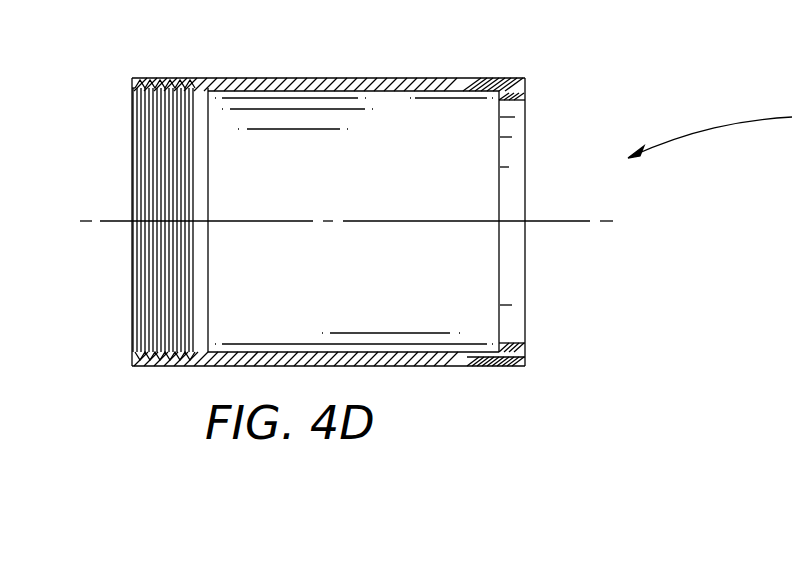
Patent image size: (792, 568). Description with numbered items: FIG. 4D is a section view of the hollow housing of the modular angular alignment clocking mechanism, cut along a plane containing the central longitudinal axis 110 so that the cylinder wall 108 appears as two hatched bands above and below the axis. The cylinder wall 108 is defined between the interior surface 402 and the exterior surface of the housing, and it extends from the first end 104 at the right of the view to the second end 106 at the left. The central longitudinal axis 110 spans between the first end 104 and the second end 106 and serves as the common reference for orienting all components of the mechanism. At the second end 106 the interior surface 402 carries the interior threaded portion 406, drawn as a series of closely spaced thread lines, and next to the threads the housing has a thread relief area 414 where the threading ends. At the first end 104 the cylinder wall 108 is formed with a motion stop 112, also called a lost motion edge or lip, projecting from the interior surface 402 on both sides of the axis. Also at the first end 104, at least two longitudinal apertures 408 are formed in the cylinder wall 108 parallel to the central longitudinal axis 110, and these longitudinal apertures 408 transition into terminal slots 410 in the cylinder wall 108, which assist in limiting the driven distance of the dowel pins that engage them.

The first end 104 is at (528, 78).
The second end 106 is at (125, 88).
The cylinder wall 108 is at (280, 78).
The central longitudinal axis 110 is at (565, 221).
The motion stop 112 is at (506, 97).
The interior surface 402 is at (400, 97).
The interior threaded portion 406 is at (147, 170).
The longitudinal apertures 408 is at (510, 356).
The terminal slots 410 is at (478, 367).
The thread relief area 414 is at (201, 297).